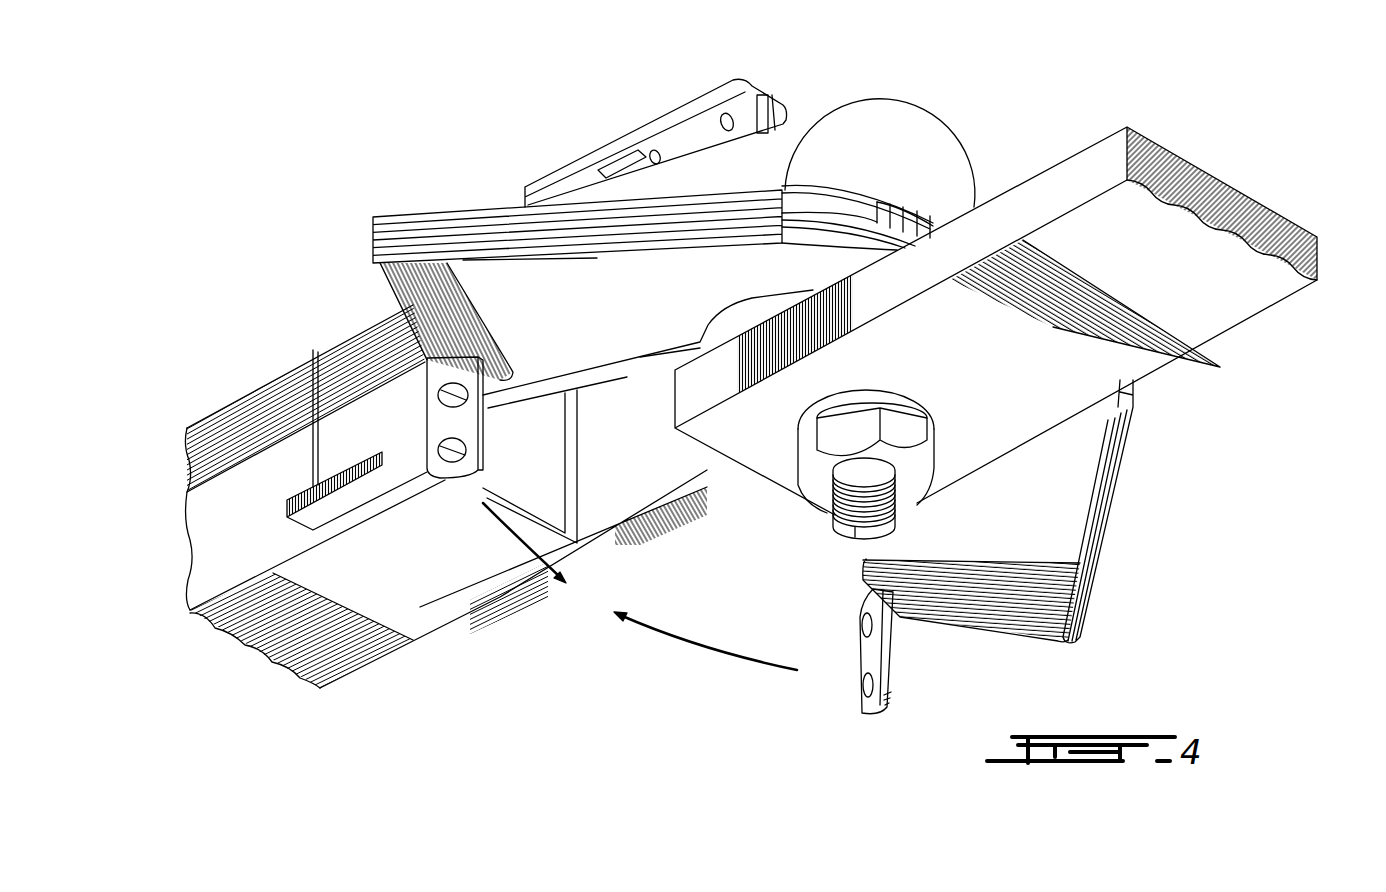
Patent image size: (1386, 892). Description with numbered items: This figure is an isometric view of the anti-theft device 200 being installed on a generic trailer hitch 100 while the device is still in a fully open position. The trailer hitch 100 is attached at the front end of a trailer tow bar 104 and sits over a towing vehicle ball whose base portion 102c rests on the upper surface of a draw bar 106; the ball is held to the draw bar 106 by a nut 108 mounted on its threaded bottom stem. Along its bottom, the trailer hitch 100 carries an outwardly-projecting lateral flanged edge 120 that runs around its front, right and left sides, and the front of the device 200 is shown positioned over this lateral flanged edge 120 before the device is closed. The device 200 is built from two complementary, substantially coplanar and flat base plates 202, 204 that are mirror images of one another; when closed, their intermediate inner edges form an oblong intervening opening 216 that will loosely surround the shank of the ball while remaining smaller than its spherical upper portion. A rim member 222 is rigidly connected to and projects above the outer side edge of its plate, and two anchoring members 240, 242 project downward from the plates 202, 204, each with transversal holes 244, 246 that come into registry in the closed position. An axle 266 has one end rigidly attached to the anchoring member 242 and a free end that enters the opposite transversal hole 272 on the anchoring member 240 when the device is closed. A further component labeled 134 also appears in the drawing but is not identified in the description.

The trailer hitch 100 is at (900, 86).
The base portion 102c is at (855, 537).
The trailer tow bar 104 is at (238, 433).
The draw bar 106 is at (1240, 298).
The nut 108 is at (1041, 458).
The lateral flanged edge 120 is at (469, 499).
The hanger plate 134 is at (677, 122).
The device 200 is at (930, 200).
The base plate 202 is at (1058, 517).
The base plate 204 is at (563, 273).
The intervening opening 216 is at (747, 320).
The rim member 222 is at (583, 223).
The anchoring member 240 is at (809, 677).
The anchoring member 242 is at (465, 475).
The transversal hole 244 is at (863, 688).
The transversal hole 246 is at (455, 455).
The axle 266 is at (457, 397).
The transversal hole 272 is at (862, 628).